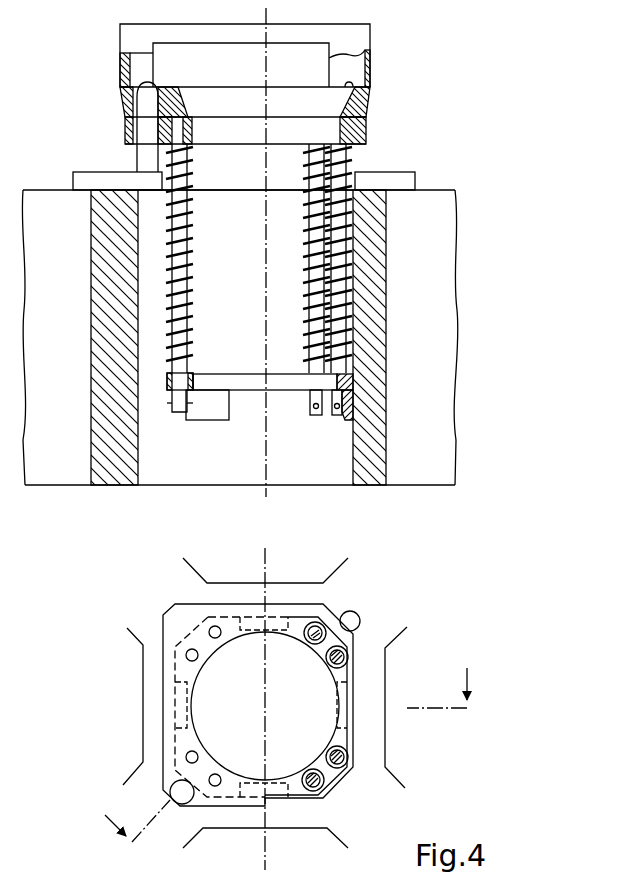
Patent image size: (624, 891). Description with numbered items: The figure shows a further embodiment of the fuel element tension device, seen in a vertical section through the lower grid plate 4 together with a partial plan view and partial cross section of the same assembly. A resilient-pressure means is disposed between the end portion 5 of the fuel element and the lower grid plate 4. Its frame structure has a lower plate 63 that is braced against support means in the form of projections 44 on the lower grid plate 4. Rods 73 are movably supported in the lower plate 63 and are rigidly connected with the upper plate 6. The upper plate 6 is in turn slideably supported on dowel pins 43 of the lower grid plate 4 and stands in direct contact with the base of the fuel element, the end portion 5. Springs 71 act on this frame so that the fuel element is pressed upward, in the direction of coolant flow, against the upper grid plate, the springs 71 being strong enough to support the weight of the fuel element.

In FIG. 4a, the lower grid plate 4 is at (438, 461).
In FIG. 4a, the end portion of the fuel element 5 is at (372, 34).
In FIG. 4a, the upper plate 6 is at (124, 125).
In FIG. 4a, the dowel pins 43 is at (140, 150).
In FIG. 4, the dowel pins 43 is at (183, 797).
In FIG. 4a, the projections 44 is at (210, 410).
In FIG. 4, the projections 44 is at (345, 698).
In FIG. 4a, the lower plate 63 is at (171, 381).
In FIG. 4a, the springs 71 is at (192, 315).
In FIG. 4a, the rods 73 is at (181, 258).